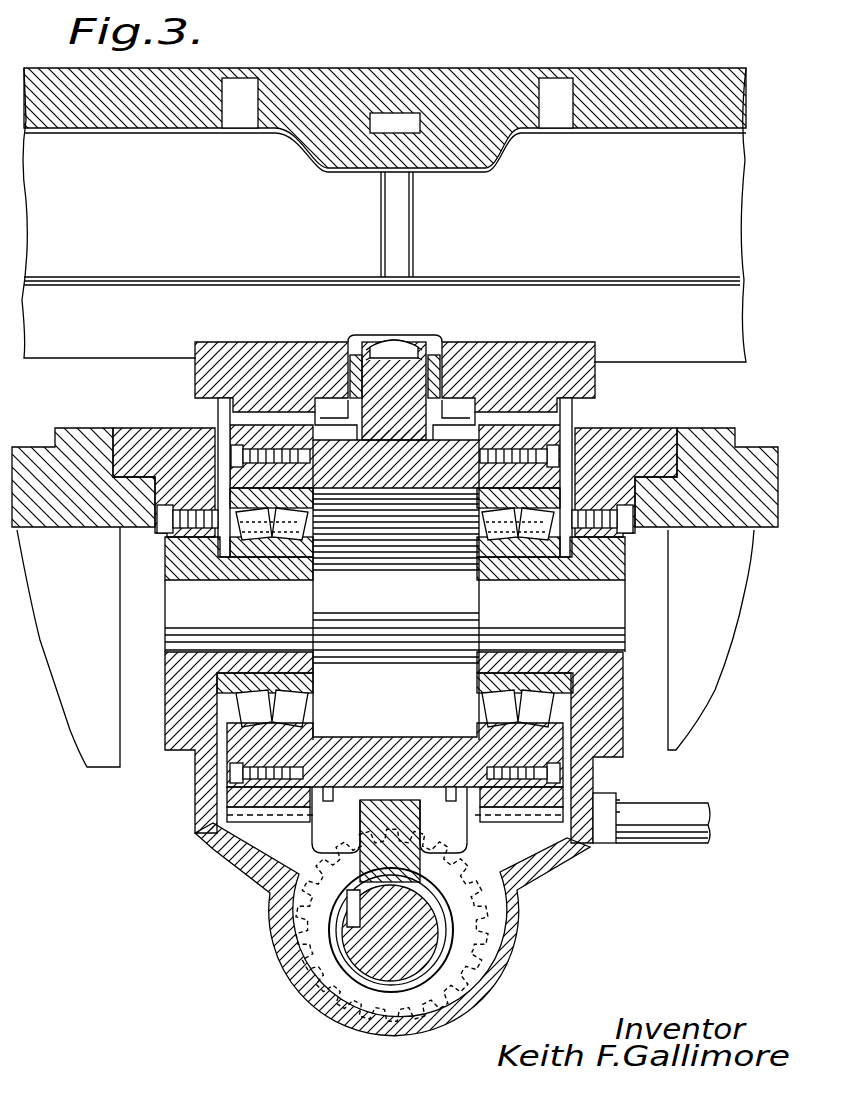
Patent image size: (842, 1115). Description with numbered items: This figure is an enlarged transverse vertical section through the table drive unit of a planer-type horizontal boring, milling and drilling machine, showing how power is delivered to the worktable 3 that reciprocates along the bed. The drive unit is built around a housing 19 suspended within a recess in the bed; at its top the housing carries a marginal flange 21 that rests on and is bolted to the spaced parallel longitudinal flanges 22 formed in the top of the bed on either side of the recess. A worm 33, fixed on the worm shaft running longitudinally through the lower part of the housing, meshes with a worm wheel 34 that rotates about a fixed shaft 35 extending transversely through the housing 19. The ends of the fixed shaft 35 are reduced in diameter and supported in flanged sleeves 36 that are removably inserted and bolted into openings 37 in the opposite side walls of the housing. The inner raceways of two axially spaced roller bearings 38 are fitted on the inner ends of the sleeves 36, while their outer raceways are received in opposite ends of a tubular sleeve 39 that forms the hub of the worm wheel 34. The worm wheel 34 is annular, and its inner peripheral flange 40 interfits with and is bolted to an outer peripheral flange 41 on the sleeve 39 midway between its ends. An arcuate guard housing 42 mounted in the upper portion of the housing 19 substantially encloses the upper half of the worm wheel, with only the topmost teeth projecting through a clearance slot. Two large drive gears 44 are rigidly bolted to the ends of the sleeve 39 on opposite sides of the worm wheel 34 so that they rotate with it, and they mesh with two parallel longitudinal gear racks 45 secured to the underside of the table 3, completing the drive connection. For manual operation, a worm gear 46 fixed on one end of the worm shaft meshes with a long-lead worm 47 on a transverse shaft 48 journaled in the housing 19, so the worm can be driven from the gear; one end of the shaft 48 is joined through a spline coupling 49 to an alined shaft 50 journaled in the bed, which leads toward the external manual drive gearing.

The worktable 3 is at (727, 211).
The housing 19 is at (248, 871).
The marginal flange 21 is at (657, 438).
The longitudinal flanges 22 is at (111, 521).
The worm 33 is at (440, 921).
The worm wheel 34 is at (358, 900).
The fixed shaft 35 is at (391, 653).
The flanged sleeves 36 is at (167, 561).
The openings 37 is at (192, 751).
The roller bearings 38 is at (288, 540).
The tubular sleeve 39 is at (382, 750).
The inner peripheral flange 40 is at (404, 345).
The outer peripheral flange 41 is at (384, 342).
The guard housing 42 is at (437, 338).
The drive gears 44 is at (230, 413).
The gear racks 45 is at (205, 379).
The worm gear 46 is at (498, 951).
The worm 47 is at (348, 826).
The transverse shaft 48 is at (512, 904).
The spline coupling 49 is at (603, 803).
The alined shaft 50 is at (676, 810).